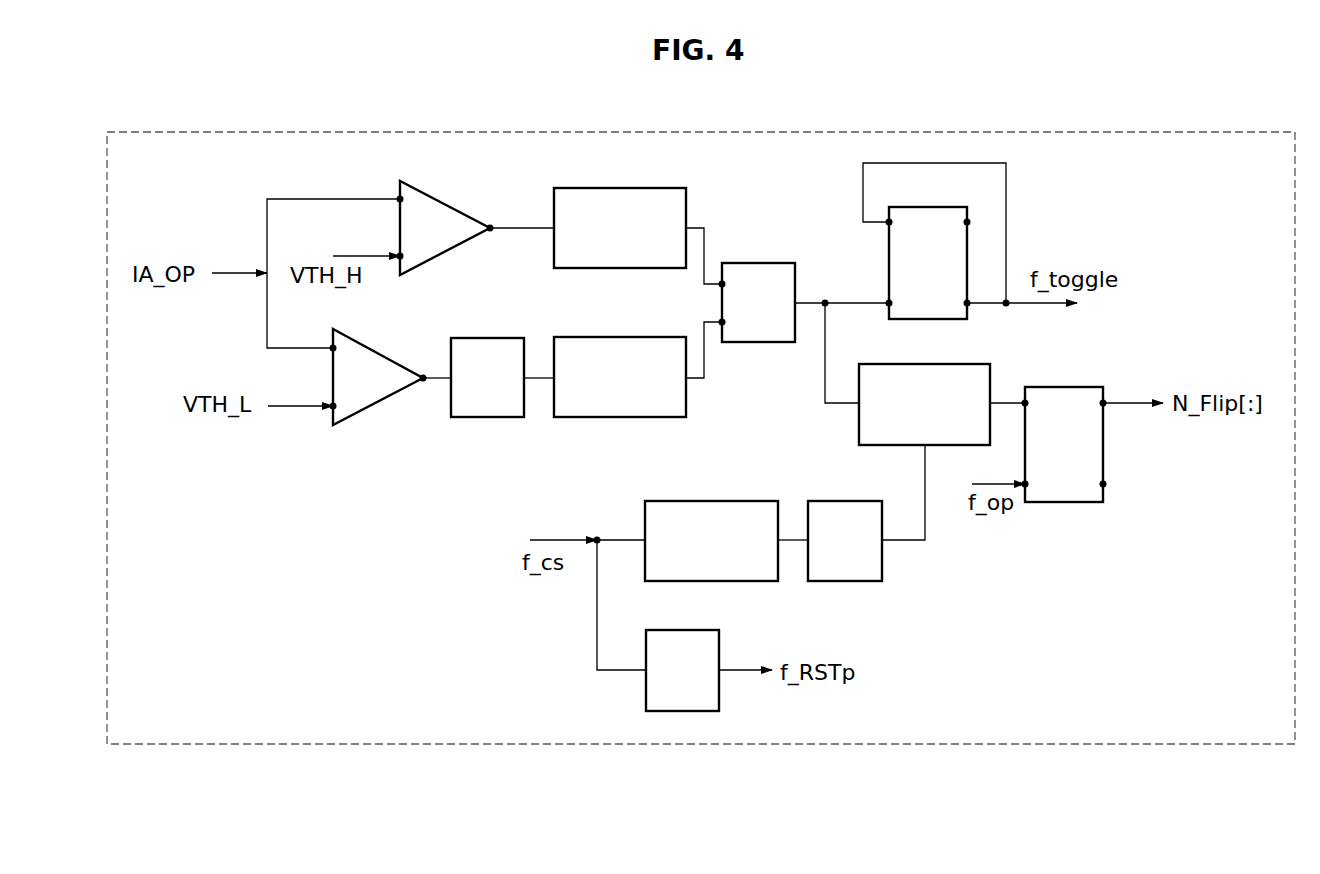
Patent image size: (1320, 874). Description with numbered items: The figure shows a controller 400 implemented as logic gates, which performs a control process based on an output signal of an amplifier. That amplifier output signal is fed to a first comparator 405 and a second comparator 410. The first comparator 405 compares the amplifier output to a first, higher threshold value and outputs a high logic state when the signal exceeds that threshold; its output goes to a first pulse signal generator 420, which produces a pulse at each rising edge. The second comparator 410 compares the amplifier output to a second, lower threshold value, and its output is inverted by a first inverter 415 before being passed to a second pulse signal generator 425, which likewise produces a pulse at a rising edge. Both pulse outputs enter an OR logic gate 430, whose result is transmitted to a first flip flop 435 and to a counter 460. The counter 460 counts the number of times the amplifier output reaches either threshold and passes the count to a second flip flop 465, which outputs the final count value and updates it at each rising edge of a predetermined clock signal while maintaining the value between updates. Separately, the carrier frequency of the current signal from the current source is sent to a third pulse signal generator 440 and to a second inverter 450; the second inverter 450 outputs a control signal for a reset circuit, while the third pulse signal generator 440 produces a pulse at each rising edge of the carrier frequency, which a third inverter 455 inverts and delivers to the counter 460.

The controller 400 is at (703, 131).
The first comparator 405 is at (445, 205).
The second comparator 410 is at (380, 351).
The first inverter 415 is at (485, 338).
The first pulse signal generator 420 is at (620, 188).
The second pulse signal generator 425 is at (620, 337).
The OR logic gate 430 is at (760, 263).
The first flip flop 435 is at (927, 207).
The third pulse signal generator 440 is at (712, 501).
The second inverter 450 is at (683, 630).
The third inverter 455 is at (845, 501).
The counter 460 is at (925, 364).
The second flip flop 465 is at (1065, 387).